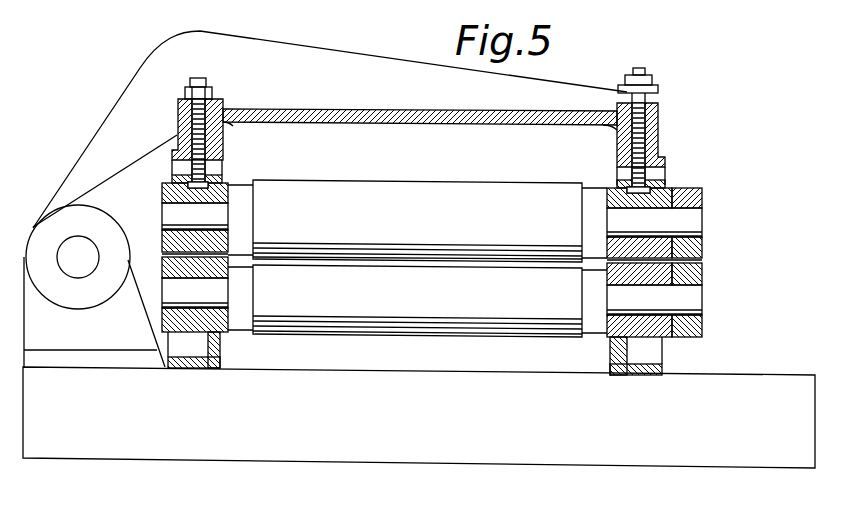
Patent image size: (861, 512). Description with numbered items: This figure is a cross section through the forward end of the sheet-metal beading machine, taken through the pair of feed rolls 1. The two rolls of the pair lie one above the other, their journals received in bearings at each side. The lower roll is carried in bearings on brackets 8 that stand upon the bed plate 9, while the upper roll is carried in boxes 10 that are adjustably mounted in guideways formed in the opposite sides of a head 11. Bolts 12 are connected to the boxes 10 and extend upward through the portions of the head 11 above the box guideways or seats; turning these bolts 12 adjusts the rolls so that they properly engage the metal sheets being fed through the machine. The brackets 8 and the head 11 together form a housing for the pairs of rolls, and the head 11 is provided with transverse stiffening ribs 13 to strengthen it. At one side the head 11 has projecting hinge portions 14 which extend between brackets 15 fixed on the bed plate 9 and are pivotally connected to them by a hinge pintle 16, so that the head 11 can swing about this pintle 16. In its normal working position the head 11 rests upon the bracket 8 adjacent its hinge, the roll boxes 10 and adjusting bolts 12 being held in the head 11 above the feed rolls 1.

The feed rolls 1 is at (422, 283).
The brackets 8 is at (220, 352).
The bed plate 9 is at (313, 447).
The boxes 10 is at (668, 188).
The head 11 is at (330, 110).
The bolts 12 is at (217, 65).
The transverse stiffening ribs 13 is at (332, 57).
The hinge portions 14 is at (110, 205).
The brackets 15 is at (128, 320).
The hinge pintle 16 is at (76, 258).